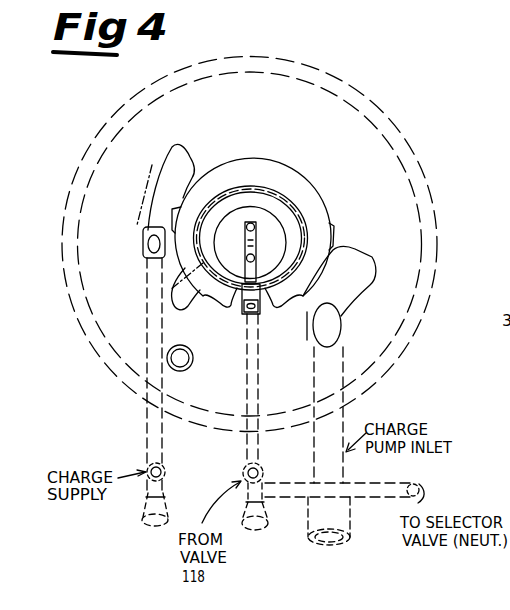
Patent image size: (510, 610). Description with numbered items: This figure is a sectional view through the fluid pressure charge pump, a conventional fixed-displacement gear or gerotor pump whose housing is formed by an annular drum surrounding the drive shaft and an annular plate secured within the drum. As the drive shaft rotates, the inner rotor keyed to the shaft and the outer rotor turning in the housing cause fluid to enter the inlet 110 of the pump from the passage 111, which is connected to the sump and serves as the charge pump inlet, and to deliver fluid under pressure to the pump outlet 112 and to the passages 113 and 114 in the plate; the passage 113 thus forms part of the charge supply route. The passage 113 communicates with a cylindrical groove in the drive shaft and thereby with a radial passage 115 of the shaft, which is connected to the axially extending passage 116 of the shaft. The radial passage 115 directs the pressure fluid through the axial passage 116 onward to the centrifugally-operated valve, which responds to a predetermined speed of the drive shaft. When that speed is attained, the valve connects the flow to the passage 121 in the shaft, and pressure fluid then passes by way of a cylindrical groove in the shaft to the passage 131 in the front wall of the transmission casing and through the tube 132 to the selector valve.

The inlet 110 is at (362, 284).
The passage 111 is at (346, 420).
The pump outlet 112 is at (176, 303).
The passage 113 is at (150, 423).
The passage 114 is at (148, 242).
The radial passage 115 is at (242, 305).
The axially extending passage 116 is at (251, 223).
The passage 121 is at (254, 258).
The passage 131 is at (260, 382).
The tube 132 is at (280, 480).